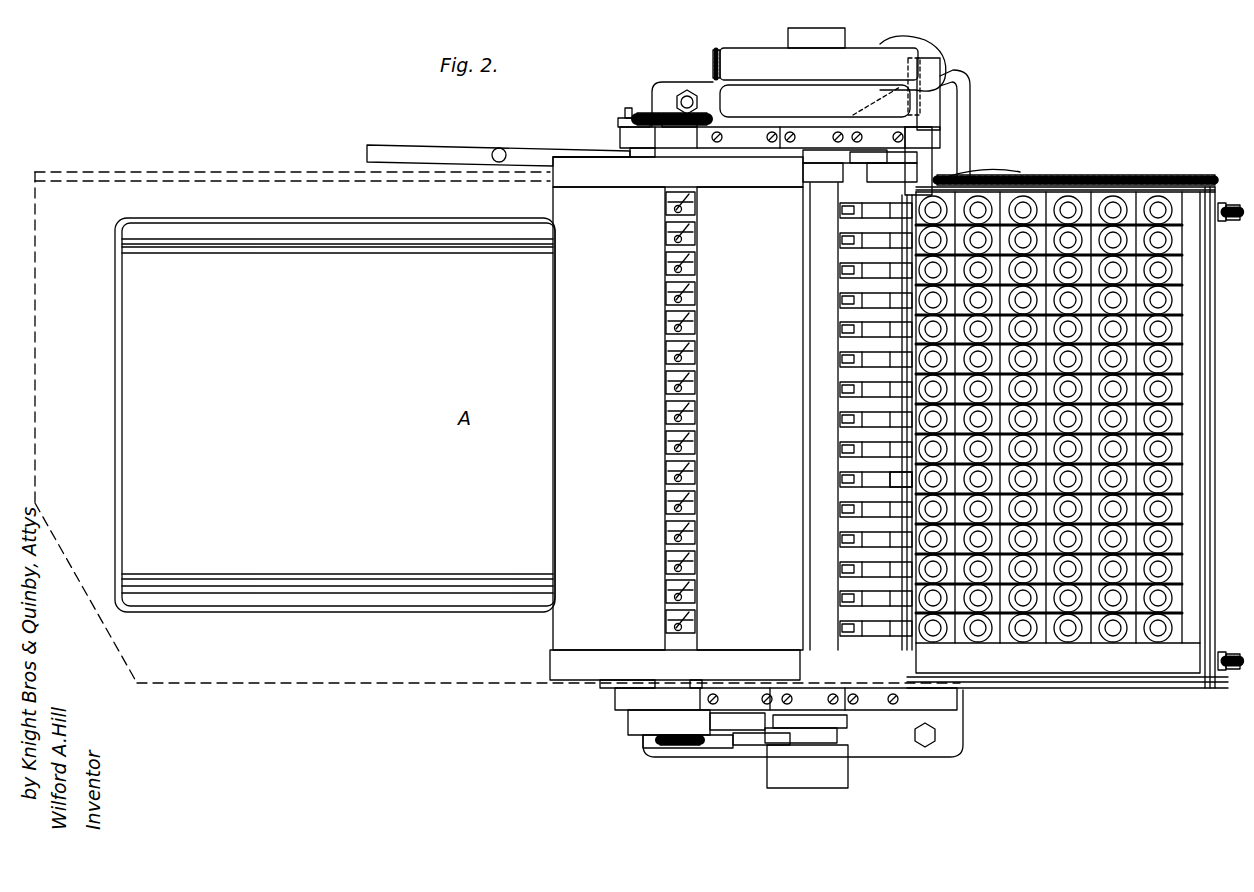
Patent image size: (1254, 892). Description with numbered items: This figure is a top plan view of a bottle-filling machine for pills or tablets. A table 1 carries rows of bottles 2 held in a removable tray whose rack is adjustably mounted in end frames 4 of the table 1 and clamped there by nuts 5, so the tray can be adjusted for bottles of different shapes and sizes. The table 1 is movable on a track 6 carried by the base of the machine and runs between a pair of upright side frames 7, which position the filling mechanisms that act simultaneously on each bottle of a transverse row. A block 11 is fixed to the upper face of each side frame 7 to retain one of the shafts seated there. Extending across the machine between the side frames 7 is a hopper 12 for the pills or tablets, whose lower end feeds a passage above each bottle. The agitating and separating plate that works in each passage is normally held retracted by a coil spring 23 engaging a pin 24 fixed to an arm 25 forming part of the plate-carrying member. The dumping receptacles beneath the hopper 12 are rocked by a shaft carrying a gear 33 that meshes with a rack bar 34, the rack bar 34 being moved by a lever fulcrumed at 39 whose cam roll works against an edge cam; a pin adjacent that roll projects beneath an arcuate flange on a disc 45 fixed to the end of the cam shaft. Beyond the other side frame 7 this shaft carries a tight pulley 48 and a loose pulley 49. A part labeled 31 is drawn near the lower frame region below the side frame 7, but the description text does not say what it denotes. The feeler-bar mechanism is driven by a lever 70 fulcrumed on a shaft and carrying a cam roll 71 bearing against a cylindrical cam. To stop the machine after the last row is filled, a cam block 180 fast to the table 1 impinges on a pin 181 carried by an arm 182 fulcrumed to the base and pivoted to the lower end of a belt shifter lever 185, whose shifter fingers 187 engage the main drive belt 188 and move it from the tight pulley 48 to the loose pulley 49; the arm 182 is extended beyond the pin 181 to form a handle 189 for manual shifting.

The table 1 is at (1163, 655).
The bottles 2 is at (1105, 634).
The end frames 4 is at (1193, 188).
The nuts 5 is at (1232, 224).
The track 6 is at (503, 252).
The side frames 7 is at (676, 418).
The block 11 is at (885, 133).
The hopper 12 is at (678, 418).
The coil spring 23 is at (657, 112).
The pin 24 is at (630, 108).
The arm 25 is at (625, 125).
The lever 31 is at (822, 720).
The gear 33 is at (690, 748).
The rack bar 34 is at (658, 745).
The fulcrum 39 is at (740, 752).
The disc 45 is at (818, 790).
The tight pulley 48 is at (815, 101).
The loose pulley 49 is at (819, 54).
The lever 70 is at (900, 510).
The cam roll 71 is at (840, 458).
The cam block 180 is at (467, 174).
The pin 181 is at (499, 148).
The arm 182 is at (541, 152).
The belt shifter lever 185 is at (940, 97).
The shifter fingers 187 is at (918, 42).
The main drive belt 188 is at (716, 50).
The handle 189 is at (379, 145).